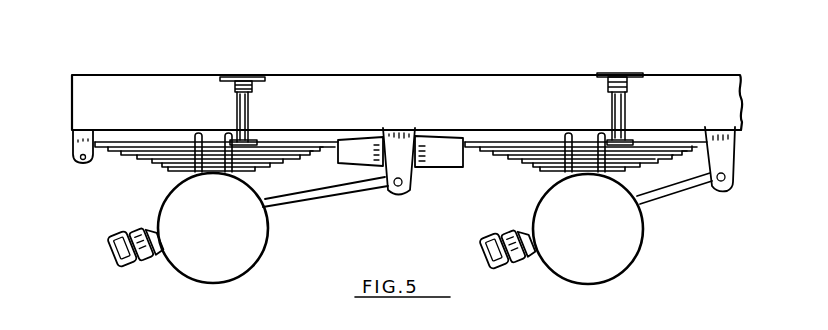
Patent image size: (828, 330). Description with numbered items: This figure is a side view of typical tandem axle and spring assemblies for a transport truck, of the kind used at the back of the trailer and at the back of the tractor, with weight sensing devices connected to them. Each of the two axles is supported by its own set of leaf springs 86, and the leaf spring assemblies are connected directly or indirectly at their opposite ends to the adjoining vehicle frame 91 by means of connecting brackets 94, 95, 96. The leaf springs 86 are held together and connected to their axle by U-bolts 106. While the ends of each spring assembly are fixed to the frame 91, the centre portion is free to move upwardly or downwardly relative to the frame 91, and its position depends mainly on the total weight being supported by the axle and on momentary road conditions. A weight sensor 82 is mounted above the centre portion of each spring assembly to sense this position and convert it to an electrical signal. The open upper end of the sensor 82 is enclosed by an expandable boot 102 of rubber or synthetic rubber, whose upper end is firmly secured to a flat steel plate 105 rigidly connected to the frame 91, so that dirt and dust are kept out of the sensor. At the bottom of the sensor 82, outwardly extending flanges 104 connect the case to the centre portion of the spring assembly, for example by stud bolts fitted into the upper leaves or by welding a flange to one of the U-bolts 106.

The vehicle frame 91 is at (509, 75).
The connecting bracket 94 is at (97, 135).
The connecting bracket 95 is at (403, 150).
The connecting bracket 96 is at (718, 130).
The leaf springs 86 is at (170, 170).
The U-bolts 106 is at (229, 131).
The weight sensor 82 is at (250, 106).
The flat steel plate 105 is at (243, 75).
The expandable boot 102 is at (256, 88).
The flanges 104 is at (256, 140).